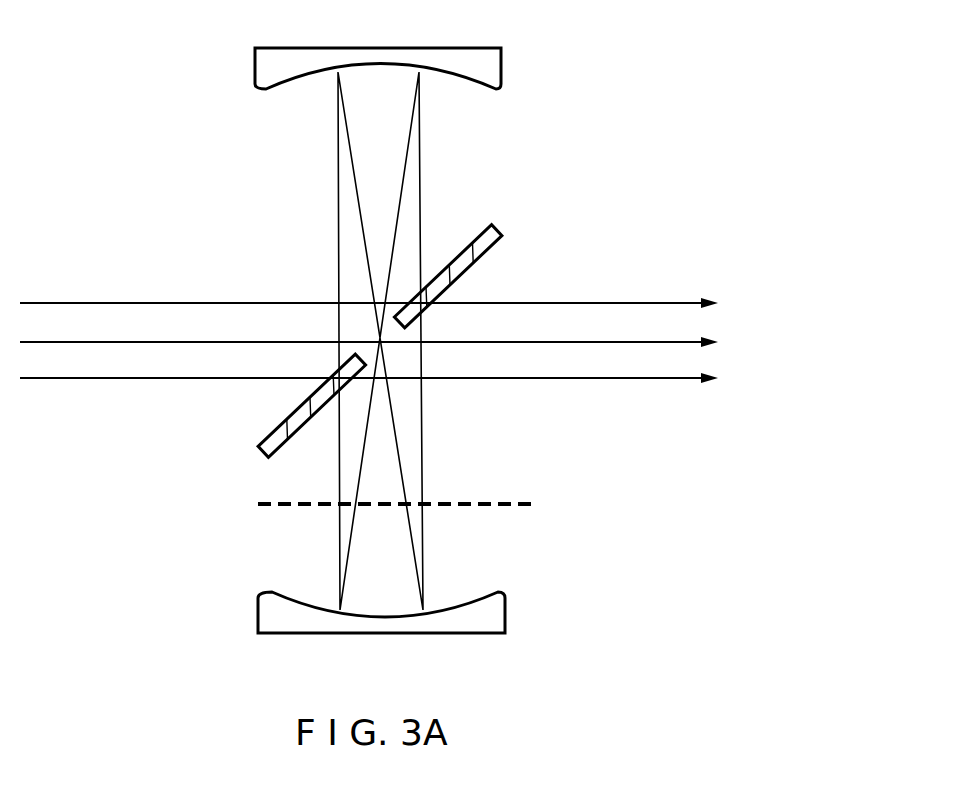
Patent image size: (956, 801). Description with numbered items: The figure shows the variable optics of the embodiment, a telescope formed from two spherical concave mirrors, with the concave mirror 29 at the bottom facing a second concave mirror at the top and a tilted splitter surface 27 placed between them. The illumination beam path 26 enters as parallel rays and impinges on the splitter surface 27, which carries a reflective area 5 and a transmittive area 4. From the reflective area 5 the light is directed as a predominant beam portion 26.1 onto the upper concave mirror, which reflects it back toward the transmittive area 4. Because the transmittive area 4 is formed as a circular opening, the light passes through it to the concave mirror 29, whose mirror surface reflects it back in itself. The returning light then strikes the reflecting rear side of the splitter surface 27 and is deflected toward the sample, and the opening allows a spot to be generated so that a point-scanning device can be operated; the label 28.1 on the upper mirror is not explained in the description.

The first resonator mirror 28.1 is at (502, 62).
The second resonator mirror 29 is at (506, 607).
The resonator beam path 26.1 is at (412, 181).
The incident light beam 26 is at (207, 317).
The beam crossing point / focus 4 is at (379, 340).
The beam splitter plate 5 is at (327, 366).
The plate segment 27 is at (263, 452).